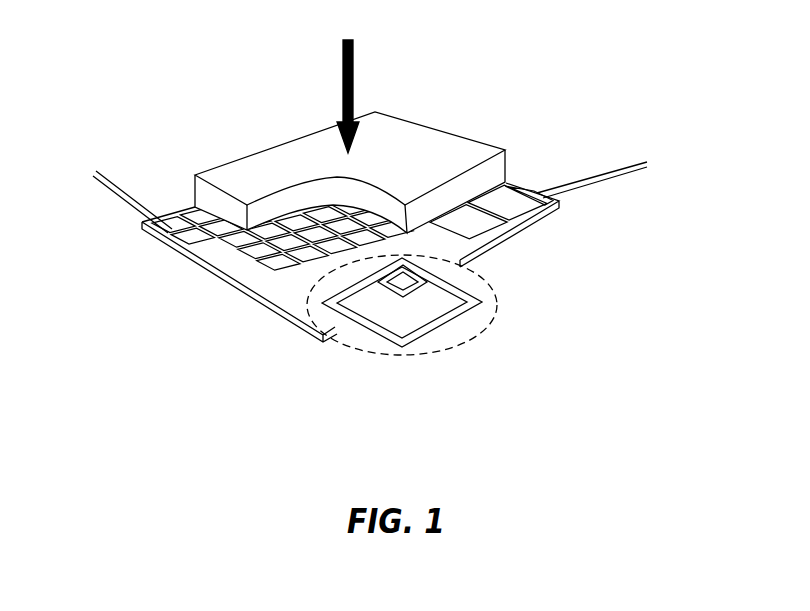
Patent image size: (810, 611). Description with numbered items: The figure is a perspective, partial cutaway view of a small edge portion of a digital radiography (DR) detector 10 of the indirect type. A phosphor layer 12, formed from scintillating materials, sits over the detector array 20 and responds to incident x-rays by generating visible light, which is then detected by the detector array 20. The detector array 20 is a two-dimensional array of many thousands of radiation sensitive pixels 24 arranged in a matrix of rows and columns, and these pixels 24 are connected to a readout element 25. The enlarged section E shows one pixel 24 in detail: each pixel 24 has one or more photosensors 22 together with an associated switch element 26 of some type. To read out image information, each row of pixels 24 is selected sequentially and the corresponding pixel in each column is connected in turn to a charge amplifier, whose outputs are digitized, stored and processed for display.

The digital radiography detector 10 is at (540, 37).
The phosphor layer 12 is at (232, 165).
The detector array 20 is at (210, 270).
The photosensor 22 is at (400, 312).
The radiation sensitive pixel 24 is at (320, 265).
The readout element 25 is at (374, 191).
The switch element 26 is at (400, 278).
The enlarged section E is at (380, 352).